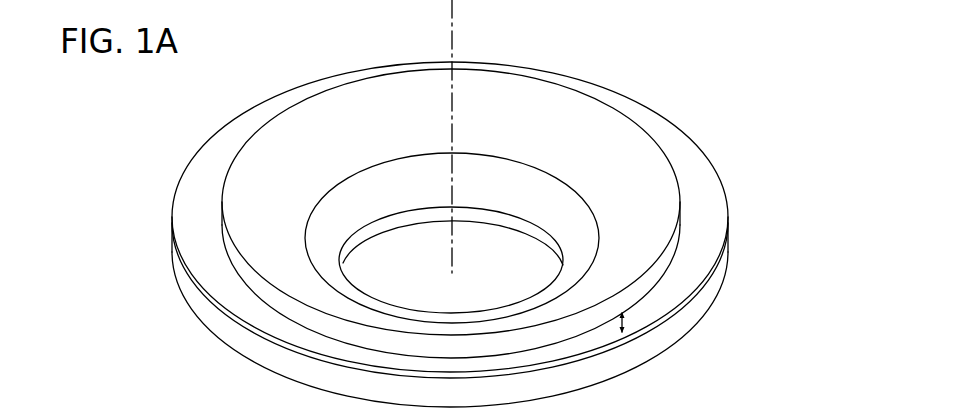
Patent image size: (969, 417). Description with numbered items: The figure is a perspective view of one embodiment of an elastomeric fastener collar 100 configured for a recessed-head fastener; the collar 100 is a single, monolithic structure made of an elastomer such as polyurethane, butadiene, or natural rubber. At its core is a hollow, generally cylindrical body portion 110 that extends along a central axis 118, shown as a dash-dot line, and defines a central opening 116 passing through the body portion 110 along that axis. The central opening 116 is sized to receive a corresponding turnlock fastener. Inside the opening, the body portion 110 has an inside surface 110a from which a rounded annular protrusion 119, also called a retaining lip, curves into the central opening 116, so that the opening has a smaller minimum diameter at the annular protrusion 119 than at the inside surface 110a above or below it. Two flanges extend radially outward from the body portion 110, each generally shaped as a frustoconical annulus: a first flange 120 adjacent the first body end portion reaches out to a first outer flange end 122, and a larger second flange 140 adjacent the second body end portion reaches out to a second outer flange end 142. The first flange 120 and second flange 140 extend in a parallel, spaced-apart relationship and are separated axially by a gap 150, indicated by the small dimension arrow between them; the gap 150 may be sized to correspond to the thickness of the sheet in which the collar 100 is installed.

The fastener collar 100 is at (469, 208).
The body portion 110 is at (560, 347).
The inside surface 110a is at (547, 246).
The central opening 116 is at (478, 272).
The central axis 118 is at (452, 15).
The annular protrusion 119 is at (380, 223).
The first flange 120 is at (275, 152).
The first outer flange end 122 is at (232, 250).
The second flange 140 is at (200, 215).
The second outer flange end 142 is at (195, 295).
The gap 150 is at (623, 320).